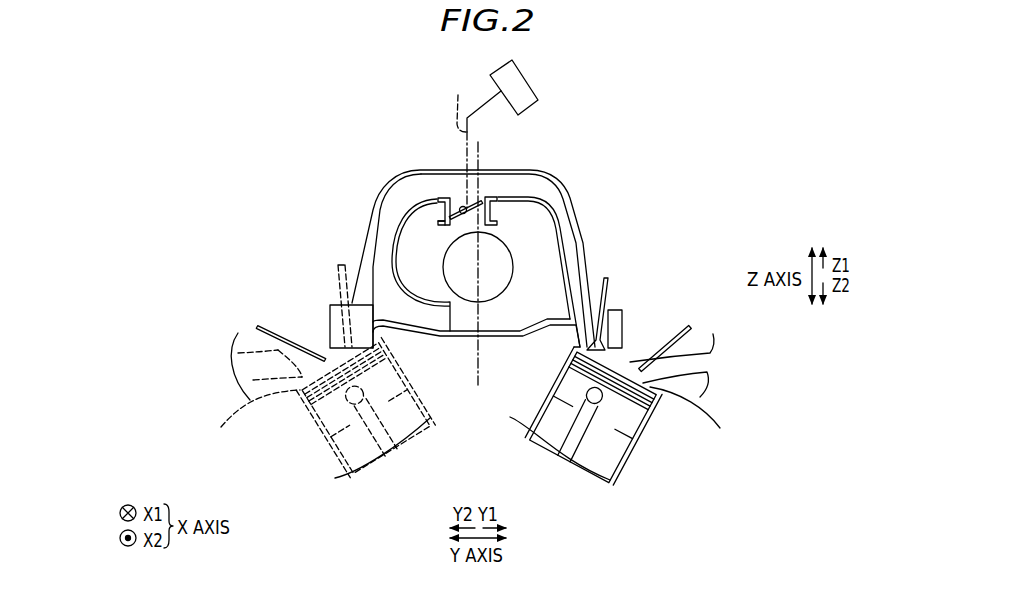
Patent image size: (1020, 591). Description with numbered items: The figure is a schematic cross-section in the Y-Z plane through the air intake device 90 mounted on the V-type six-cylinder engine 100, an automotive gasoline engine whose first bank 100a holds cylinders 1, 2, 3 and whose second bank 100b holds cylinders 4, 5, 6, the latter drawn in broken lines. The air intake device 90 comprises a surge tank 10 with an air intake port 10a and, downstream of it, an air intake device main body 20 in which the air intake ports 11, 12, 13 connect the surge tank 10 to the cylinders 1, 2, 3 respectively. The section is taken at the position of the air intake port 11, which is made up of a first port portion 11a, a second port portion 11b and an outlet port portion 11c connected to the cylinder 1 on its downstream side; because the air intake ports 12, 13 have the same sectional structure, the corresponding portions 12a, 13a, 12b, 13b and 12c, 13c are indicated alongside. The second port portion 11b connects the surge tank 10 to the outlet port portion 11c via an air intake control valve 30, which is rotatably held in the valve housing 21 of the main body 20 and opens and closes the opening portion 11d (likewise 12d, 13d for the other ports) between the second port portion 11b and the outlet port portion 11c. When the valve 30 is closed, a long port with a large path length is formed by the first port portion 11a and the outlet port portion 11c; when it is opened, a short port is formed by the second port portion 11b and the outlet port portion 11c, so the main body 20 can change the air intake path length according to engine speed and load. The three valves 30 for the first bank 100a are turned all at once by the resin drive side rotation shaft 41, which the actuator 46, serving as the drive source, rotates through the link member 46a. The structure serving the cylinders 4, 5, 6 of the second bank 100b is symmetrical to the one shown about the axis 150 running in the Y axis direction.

The cylinder 1 is at (642, 416).
The cylinder 2 is at (642, 416).
The cylinder 3 is at (606, 448).
The cylinder 4 is at (310, 408).
The cylinder 5 is at (310, 408).
The cylinder 6 is at (342, 453).
The surge tank 10 is at (461, 324).
The air intake port 10a is at (496, 292).
The air intake port 11 is at (459, 211).
The air intake port 12 is at (459, 211).
The air intake port 13 is at (396, 181).
The first port portion 11a is at (283, 261).
The left side wall of holder 12a is at (283, 261).
The left side wall of holder 13a is at (380, 272).
The second port portion 11b is at (297, 199).
The upper bracket portion 12b is at (297, 199).
The upper bracket portion 13b is at (437, 199).
The outlet port portion 11c is at (597, 260).
The right side wall of holder 12c is at (597, 260).
The right side wall of holder 13c is at (581, 248).
The opening portion 11d is at (295, 215).
The lower tab portion 12d is at (295, 215).
The lower tab portion 13d is at (437, 225).
The air intake device main body 20 is at (578, 184).
The valve housing 21 is at (497, 199).
The air intake control valve 30 is at (460, 207).
The drive side rotation shaft 41 is at (497, 212).
The actuator 46 is at (544, 86).
The link member 46a is at (462, 87).
The air intake device 90 is at (677, 96).
The V-type six-cylinder engine 100 is at (633, 485).
The first bank 100a is at (655, 389).
The second bank 100b is at (306, 372).
The axis 150 is at (480, 352).